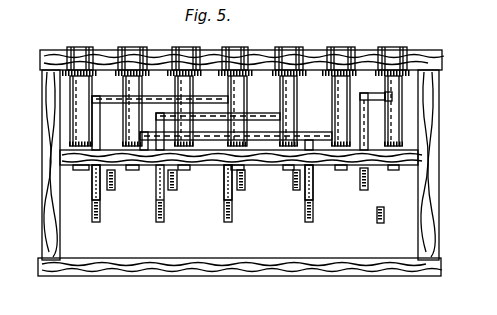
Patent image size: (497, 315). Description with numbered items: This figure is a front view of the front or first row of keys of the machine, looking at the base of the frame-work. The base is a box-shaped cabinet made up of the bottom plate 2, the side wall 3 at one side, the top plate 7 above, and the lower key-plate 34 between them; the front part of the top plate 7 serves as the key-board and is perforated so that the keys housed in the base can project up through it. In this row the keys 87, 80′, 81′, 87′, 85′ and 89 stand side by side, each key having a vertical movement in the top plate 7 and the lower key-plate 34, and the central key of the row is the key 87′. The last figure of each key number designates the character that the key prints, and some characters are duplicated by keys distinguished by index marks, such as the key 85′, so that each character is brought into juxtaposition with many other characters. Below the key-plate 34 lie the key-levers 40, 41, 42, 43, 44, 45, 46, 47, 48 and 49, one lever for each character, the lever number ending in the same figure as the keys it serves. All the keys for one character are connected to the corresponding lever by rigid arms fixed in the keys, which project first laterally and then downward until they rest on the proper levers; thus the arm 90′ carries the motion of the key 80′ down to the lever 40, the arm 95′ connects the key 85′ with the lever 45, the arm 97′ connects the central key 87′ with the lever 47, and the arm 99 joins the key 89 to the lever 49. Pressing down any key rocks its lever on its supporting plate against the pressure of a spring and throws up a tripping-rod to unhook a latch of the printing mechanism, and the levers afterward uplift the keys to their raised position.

The bottom plate 2 is at (116, 276).
The side wall 3 is at (42, 228).
The top plate 7 is at (38, 62).
The lower key-plate 34 is at (60, 160).
The key 87 is at (72, 47).
The key 80′ is at (125, 48).
The key 81′ is at (177, 47).
The central key 87′ is at (228, 47).
The key 85′ is at (297, 48).
The key 89 is at (405, 48).
The rigid arm 95′ is at (262, 113).
The rigid arm 99 is at (360, 171).
The rigid arm 97′ is at (95, 182).
The rigid arm 90′ is at (223, 187).
The key-lever 47 is at (94, 222).
The key-lever 45 is at (159, 222).
The key-lever 40 is at (227, 222).
The key-lever 41 is at (310, 222).
The key-lever 48 is at (115, 185).
The key-lever 42 is at (177, 185).
The key-lever 43 is at (245, 183).
The key-lever 46 is at (296, 192).
The key-lever 49 is at (368, 185).
The key-lever 44 is at (379, 224).